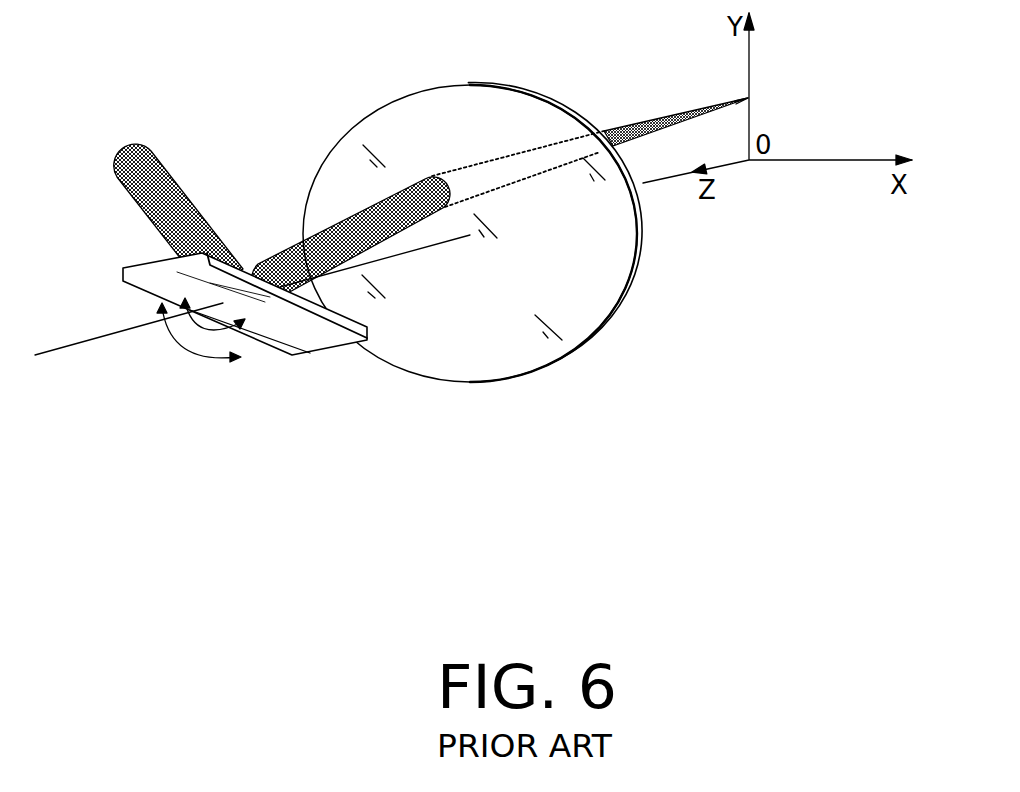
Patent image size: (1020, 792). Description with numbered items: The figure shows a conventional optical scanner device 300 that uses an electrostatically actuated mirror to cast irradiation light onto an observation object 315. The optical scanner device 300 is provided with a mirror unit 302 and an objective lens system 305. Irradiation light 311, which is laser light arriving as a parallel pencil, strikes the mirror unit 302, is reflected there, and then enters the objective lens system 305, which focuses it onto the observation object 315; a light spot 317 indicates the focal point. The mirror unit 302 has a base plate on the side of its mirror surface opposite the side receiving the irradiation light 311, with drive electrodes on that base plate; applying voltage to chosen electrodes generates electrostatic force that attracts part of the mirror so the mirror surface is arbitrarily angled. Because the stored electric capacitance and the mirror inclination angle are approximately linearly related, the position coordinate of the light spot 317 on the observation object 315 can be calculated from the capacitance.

The optical scanner device 300 is at (650, 313).
The mirror unit 302 is at (282, 337).
The objective lens system 305 is at (423, 122).
The irradiation light 311 is at (340, 220).
The observation object 315 is at (727, 68).
The light spot 317 is at (740, 98).